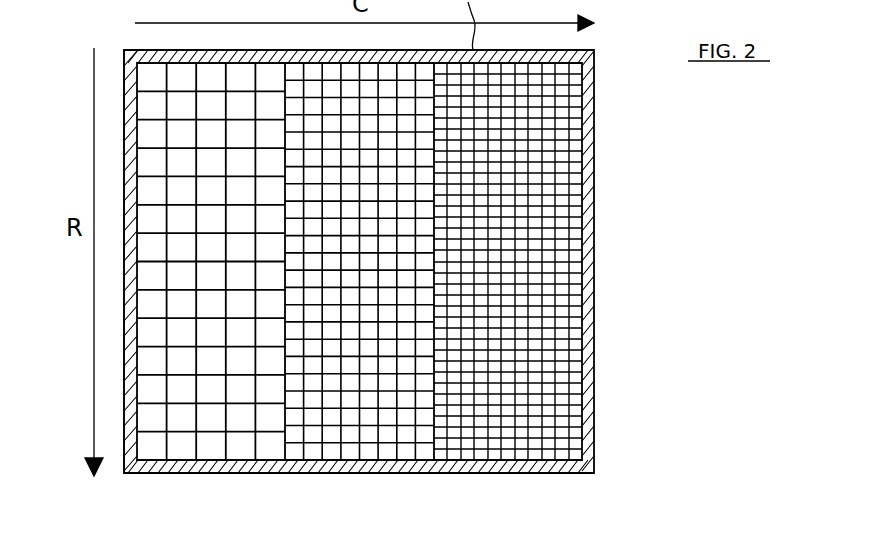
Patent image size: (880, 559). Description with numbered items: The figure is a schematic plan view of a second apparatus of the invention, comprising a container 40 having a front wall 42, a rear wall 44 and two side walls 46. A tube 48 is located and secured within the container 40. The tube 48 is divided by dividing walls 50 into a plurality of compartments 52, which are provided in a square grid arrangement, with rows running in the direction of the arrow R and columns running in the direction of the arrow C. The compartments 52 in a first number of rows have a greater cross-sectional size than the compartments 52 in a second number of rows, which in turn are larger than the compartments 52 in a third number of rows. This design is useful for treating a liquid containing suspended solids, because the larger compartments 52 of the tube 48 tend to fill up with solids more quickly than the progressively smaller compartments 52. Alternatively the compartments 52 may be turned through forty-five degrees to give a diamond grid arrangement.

The container 40 is at (352, 298).
The front wall 42 is at (125, 322).
The rear wall 44 is at (596, 298).
The side walls 46 is at (413, 473).
The tube 48 is at (560, 408).
The dividing walls 50 is at (212, 403).
The compartments 52 is at (146, 391).